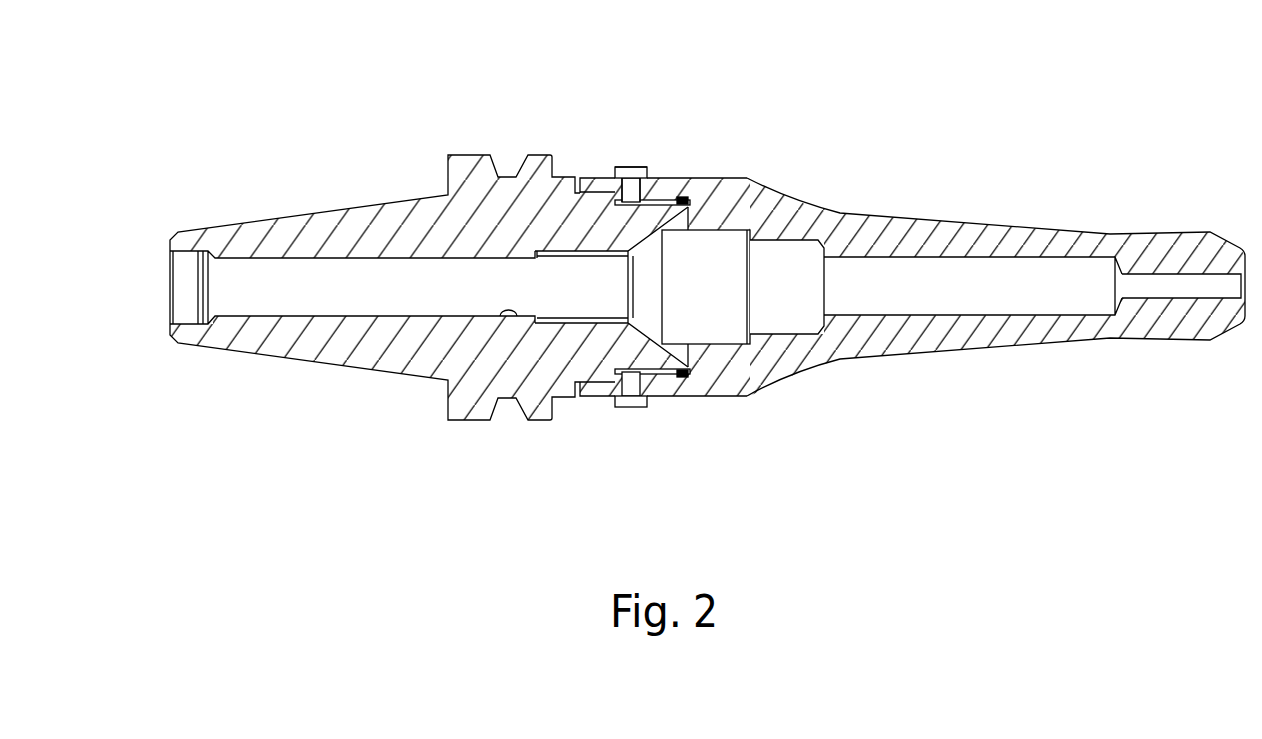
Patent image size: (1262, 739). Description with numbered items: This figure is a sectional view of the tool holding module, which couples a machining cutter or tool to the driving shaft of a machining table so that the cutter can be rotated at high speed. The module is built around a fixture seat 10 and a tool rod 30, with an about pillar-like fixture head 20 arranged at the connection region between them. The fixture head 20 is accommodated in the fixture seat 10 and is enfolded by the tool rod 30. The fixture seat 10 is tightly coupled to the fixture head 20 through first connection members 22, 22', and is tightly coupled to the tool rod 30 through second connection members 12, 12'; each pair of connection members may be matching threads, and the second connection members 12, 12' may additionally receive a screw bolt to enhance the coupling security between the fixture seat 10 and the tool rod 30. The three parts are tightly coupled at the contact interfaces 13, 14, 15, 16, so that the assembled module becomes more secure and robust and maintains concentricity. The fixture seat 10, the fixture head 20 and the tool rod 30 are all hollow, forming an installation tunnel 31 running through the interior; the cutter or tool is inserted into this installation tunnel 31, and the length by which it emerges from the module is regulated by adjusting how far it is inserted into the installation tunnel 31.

The fixture seat 10 is at (347, 206).
The second connection member 12 is at (668, 139).
The second connection member 12' is at (631, 184).
The contact interface 13 is at (592, 193).
The contact interface 14 is at (703, 195).
The contact interface 15 is at (717, 350).
The contact interface 16 is at (648, 348).
The fixture head 20 is at (745, 318).
The first connection member 22 is at (611, 355).
The first connection member 22' is at (577, 169).
The tool rod 30 is at (888, 212).
The installation tunnel 31 is at (1187, 286).